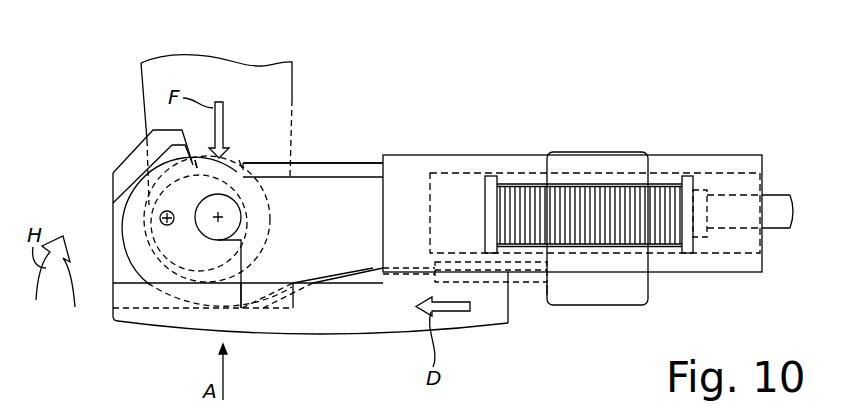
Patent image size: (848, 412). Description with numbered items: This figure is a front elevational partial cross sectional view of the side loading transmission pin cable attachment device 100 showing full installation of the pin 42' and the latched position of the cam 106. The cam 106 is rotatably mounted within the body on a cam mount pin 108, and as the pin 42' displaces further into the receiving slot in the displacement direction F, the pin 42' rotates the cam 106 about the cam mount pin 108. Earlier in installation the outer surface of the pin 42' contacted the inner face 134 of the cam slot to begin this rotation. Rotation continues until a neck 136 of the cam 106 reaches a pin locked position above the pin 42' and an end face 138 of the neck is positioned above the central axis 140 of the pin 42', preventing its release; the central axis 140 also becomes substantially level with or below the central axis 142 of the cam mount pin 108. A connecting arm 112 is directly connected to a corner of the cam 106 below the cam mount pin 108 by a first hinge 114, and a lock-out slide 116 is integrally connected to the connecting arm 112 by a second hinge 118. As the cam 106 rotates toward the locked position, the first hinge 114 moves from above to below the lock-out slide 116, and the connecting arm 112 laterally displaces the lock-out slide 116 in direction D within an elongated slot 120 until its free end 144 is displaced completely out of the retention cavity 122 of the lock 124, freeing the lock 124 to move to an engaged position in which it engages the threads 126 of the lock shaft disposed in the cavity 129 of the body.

The side loading transmission pin cable attachment device 100 is at (547, 88).
The cam 106 is at (142, 263).
The cam mount pin 108 is at (160, 220).
The connecting arm 112 is at (313, 288).
The first hinge 114 is at (242, 308).
The lock-out slide 116 is at (517, 282).
The second hinge 118 is at (375, 268).
The elongated slot 120 is at (496, 283).
The retention cavity 122 is at (543, 278).
The lock 124 is at (632, 295).
The threads 126 is at (677, 180).
The cavity 129 is at (462, 185).
The inner face 134 is at (200, 200).
The neck 136 is at (217, 180).
The end face 138 is at (223, 191).
The central axis 140 is at (218, 217).
The central axis 142 is at (165, 213).
The free end 144 is at (547, 289).
The pin 42' is at (261, 251).